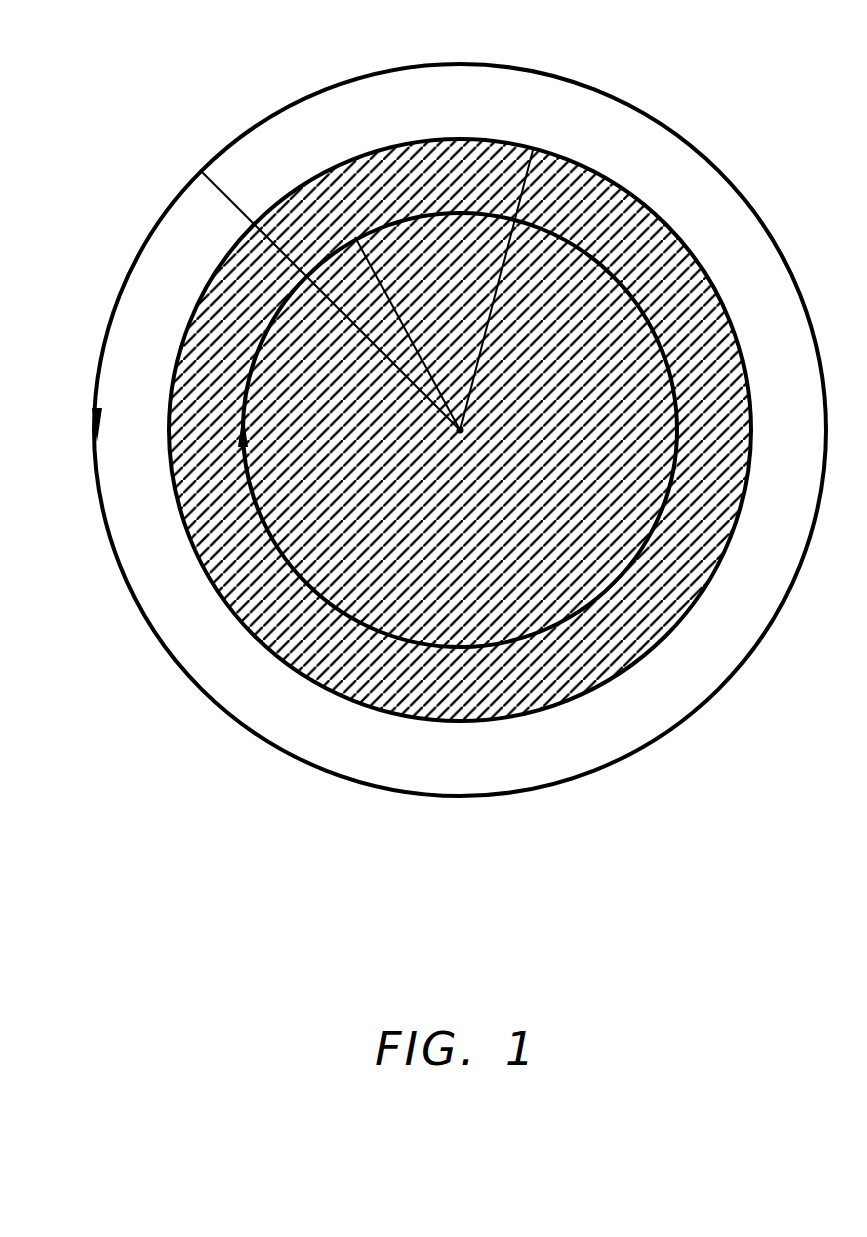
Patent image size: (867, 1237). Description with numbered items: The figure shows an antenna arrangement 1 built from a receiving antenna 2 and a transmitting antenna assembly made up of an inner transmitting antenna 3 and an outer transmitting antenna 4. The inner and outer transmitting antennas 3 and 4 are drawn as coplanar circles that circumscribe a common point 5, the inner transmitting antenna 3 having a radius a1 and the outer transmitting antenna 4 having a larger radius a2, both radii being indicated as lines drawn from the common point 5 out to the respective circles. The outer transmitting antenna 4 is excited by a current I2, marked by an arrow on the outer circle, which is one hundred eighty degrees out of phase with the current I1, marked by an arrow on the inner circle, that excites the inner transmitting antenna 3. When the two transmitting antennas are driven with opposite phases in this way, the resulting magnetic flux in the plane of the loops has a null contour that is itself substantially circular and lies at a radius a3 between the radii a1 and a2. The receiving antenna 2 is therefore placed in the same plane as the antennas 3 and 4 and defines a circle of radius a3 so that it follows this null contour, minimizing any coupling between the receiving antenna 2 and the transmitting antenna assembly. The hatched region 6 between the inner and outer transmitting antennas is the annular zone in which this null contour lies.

The antenna arrangement 1 is at (243, 108).
The receiving antenna 2 is at (670, 226).
The inner transmitting antenna 3 is at (660, 360).
The outer transmitting antenna 4 is at (712, 163).
The common point 5 is at (459, 433).
The hatched annular region 6 is at (290, 628).
The radius of inner transmitting antenna a1 is at (390, 300).
The radius of outer transmitting antenna a2 is at (378, 348).
The radius of null contour a3 is at (490, 322).
The current exciting inner antenna I1 is at (259, 426).
The current exciting outer antenna I2 is at (73, 425).